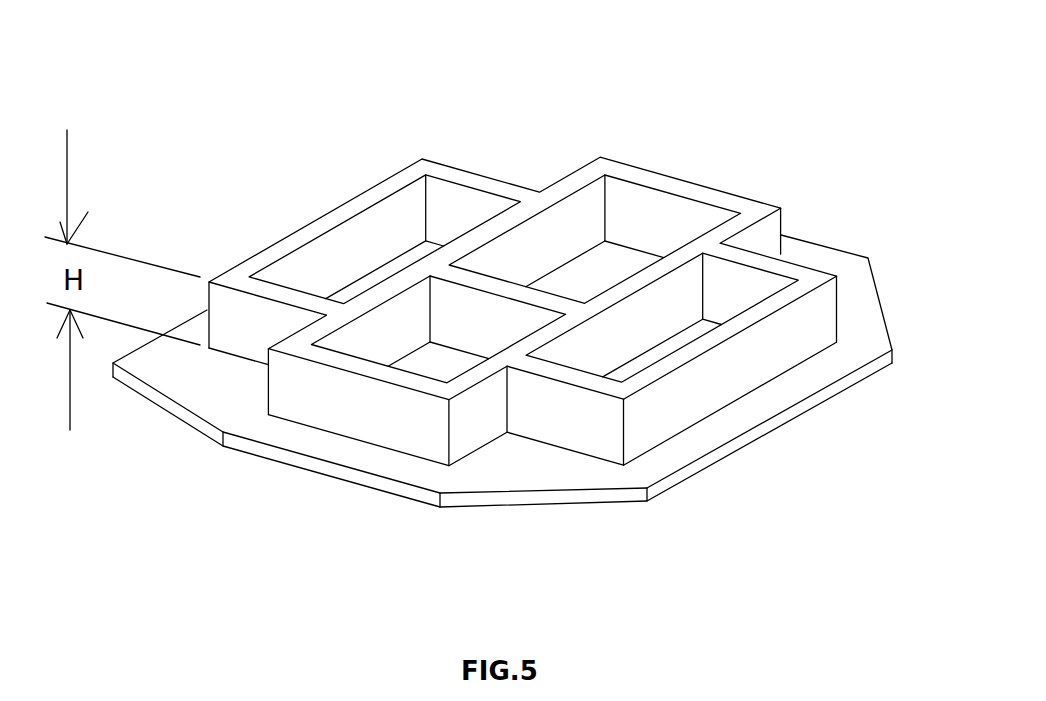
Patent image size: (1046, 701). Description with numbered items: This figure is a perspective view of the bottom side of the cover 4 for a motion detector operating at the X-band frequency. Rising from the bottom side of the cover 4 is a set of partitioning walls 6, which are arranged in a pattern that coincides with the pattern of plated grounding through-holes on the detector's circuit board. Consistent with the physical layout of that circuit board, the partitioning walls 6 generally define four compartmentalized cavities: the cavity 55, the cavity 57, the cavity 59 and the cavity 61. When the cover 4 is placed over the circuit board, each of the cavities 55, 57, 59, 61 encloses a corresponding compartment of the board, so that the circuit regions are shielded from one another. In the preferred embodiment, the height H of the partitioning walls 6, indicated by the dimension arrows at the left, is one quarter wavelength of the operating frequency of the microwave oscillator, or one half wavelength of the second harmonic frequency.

The cover 4 is at (668, 480).
The partitioning walls 6 is at (820, 327).
The cavity 55 is at (637, 210).
The cavity 57 is at (740, 293).
The cavity 59 is at (442, 347).
The cavity 61 is at (423, 207).